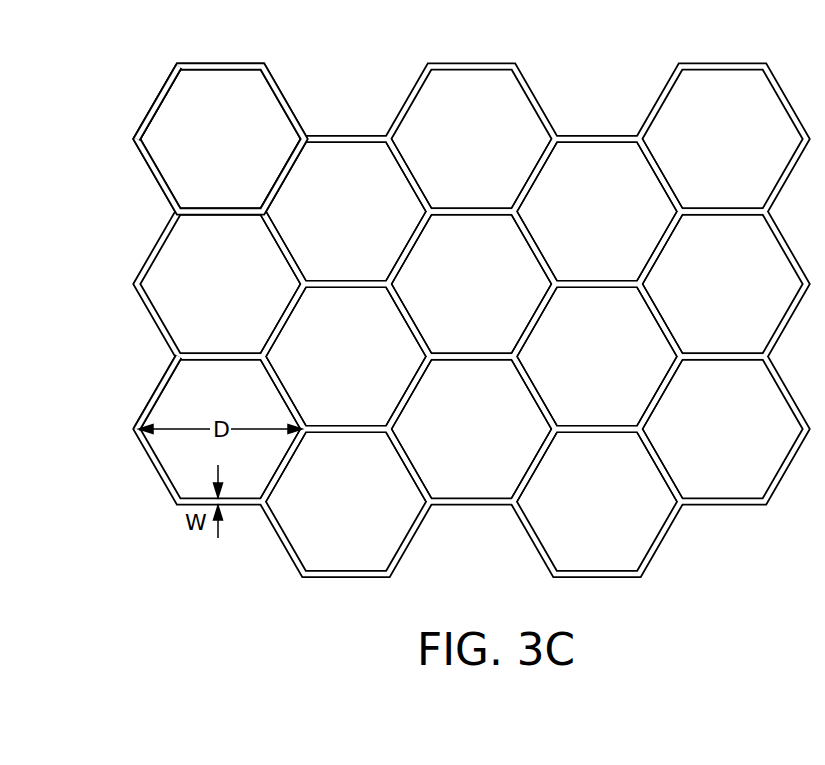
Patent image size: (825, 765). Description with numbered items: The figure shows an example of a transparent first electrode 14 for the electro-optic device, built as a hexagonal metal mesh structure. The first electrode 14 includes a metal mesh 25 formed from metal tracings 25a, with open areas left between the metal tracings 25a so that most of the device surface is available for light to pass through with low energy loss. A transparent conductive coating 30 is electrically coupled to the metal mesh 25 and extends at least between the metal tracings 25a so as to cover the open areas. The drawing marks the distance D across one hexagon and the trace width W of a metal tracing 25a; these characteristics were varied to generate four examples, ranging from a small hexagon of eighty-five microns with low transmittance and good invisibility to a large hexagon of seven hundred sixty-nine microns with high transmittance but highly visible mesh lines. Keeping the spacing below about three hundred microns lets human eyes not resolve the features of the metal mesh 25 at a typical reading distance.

The first electrode 14 is at (489, 20).
The metal mesh 25 is at (163, 82).
The metal tracings 25a is at (170, 343).
The transparent conductive coating 30 is at (177, 149).